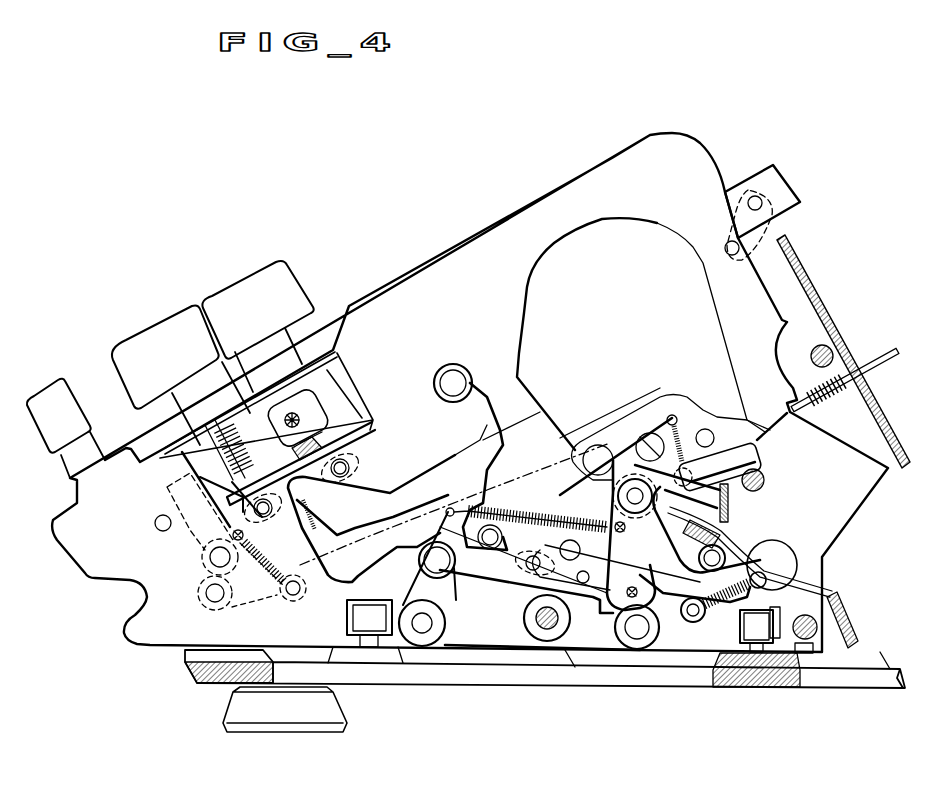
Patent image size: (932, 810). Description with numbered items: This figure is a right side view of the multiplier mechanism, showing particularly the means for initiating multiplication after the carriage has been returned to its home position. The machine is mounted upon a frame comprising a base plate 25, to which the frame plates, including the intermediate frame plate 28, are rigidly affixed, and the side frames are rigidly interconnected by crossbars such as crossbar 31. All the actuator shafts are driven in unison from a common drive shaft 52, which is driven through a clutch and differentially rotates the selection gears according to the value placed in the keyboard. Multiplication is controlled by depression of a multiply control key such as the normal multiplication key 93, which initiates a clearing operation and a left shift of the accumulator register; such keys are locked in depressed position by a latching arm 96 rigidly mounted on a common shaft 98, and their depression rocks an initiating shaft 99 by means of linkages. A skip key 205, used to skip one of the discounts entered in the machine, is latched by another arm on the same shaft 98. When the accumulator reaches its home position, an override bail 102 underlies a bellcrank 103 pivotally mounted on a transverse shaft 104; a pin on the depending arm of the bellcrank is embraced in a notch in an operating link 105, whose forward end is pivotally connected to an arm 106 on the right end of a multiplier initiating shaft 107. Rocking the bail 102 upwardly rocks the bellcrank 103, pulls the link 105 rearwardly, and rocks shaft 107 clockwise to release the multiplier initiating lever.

The intermediate frame plate 28 is at (503, 226).
The normal multiplication key 93 is at (167, 330).
The skip key 205 is at (50, 383).
The crossbar 31 is at (840, 331).
The common drive shaft 52 is at (811, 357).
The bellcrank 103 is at (740, 458).
The override bail 102 is at (733, 512).
The transverse shaft 104 is at (620, 497).
The multiplier initiating shaft 107 is at (416, 625).
The operating link 105 is at (495, 576).
The arm 106 is at (443, 596).
The initiating shaft 99 is at (556, 613).
The latching arm 96 is at (196, 528).
The common shaft 98 is at (215, 556).
The base plate 25 is at (538, 677).